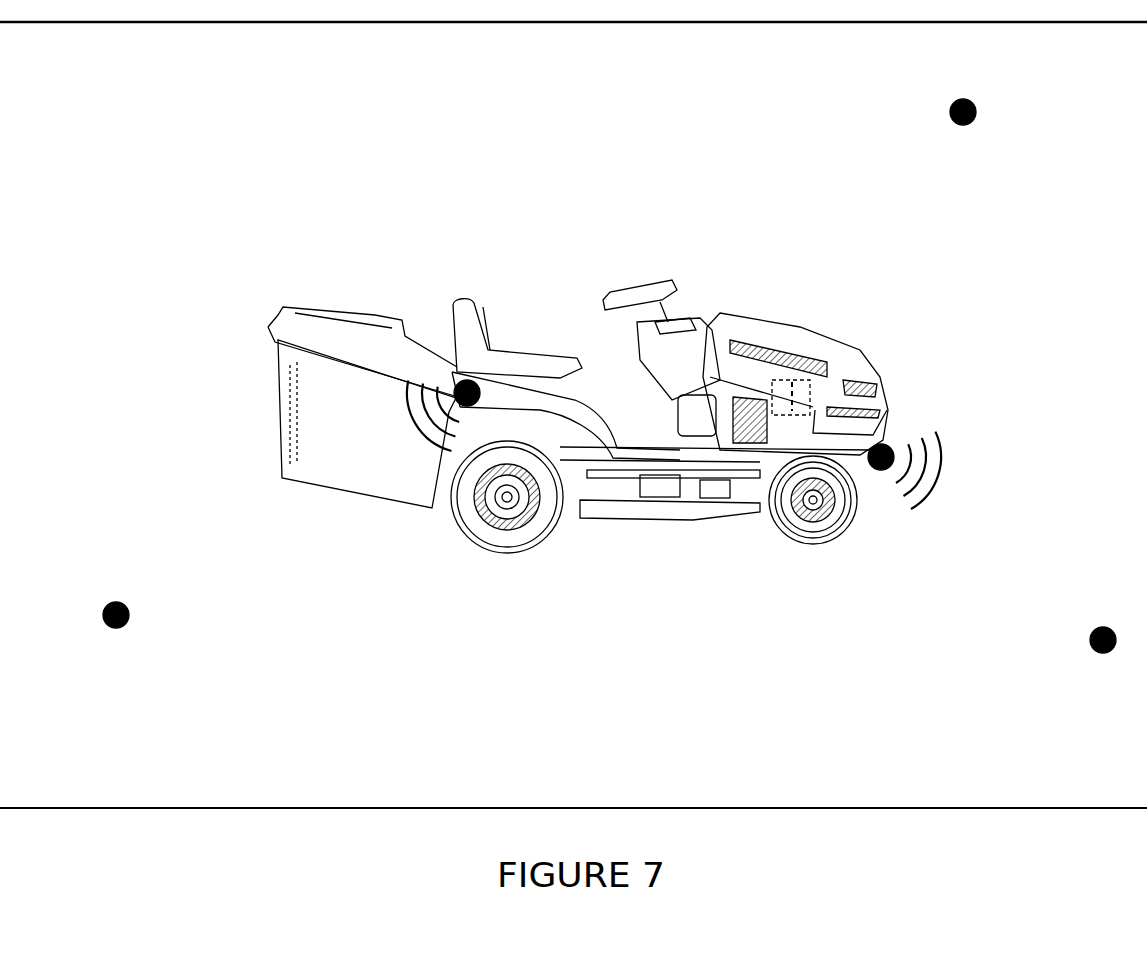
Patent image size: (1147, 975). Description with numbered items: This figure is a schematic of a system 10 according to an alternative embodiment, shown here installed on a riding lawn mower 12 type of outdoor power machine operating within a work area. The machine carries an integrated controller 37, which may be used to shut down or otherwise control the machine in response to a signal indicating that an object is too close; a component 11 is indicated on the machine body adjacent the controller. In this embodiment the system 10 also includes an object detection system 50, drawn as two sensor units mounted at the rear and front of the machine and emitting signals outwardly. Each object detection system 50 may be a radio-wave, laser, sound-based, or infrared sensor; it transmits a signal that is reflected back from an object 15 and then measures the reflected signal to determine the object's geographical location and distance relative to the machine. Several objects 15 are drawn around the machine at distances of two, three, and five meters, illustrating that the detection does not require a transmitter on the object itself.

The system 10 is at (777, 374).
The communication module 11 is at (797, 392).
The ride-on lawn mower 12 is at (568, 296).
The object 15 is at (950, 106).
The controller 37 is at (670, 326).
The object detection system 50 is at (447, 371).